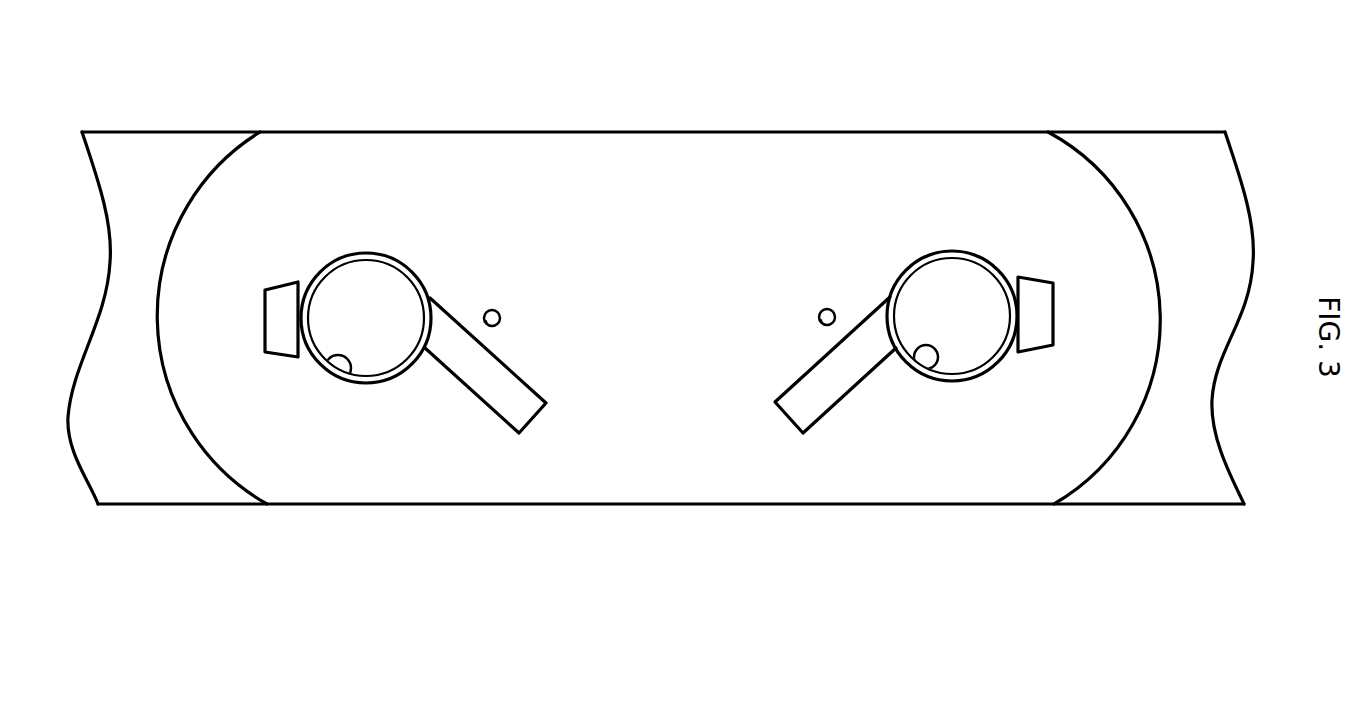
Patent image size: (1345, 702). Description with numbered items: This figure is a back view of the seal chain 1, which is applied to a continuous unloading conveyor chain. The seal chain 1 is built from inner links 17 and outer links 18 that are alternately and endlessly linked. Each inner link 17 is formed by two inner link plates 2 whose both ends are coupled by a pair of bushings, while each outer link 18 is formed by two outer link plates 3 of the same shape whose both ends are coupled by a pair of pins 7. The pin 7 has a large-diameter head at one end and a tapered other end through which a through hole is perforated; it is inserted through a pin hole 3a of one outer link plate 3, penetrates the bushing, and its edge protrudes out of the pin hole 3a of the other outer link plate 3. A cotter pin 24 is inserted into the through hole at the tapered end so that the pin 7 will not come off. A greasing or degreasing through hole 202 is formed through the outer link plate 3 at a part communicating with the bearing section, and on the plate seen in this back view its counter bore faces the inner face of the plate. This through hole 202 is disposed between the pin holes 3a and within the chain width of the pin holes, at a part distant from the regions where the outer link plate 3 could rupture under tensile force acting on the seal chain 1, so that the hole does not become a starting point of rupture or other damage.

The seal chain 1 is at (633, 87).
The inner link plate 2 is at (153, 492).
The outer link plate 3 is at (743, 155).
The pin hole 3a is at (356, 378).
The pin 7 is at (377, 285).
The inner link 17 is at (197, 124).
The outer link 18 is at (1023, 108).
The greasing or degreasing through hole 202 is at (493, 308).
The cotter pin 24 is at (480, 378).